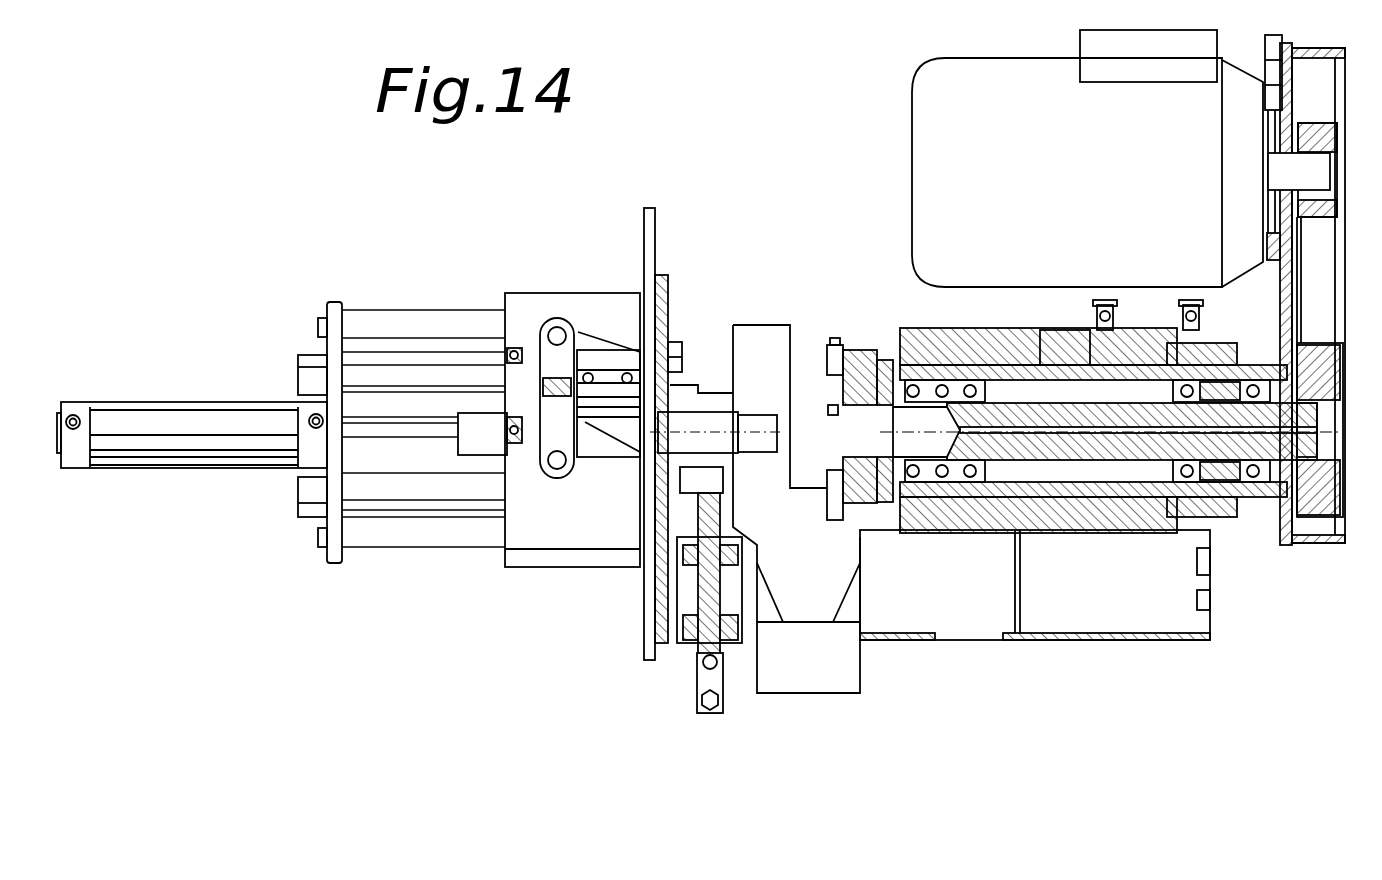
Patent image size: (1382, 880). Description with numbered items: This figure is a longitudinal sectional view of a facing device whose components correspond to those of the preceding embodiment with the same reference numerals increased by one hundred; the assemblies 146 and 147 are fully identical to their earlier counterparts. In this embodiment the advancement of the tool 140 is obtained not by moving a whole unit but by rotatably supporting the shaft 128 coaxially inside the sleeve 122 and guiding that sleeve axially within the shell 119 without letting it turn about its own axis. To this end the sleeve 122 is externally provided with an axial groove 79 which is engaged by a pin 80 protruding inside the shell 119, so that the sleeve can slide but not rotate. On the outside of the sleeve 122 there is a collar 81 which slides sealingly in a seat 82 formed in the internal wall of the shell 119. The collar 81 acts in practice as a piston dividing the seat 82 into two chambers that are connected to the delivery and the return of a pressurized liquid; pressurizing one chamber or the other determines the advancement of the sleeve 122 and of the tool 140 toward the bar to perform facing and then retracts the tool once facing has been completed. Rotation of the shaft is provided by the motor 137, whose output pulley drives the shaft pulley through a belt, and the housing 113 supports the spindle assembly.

The motor 137 is at (893, 64).
The assembly 146 is at (425, 258).
The assembly 147 is at (703, 352).
The tool 140 is at (822, 335).
The pin 80 is at (1013, 330).
The axial groove 79 is at (1060, 330).
The seat 82 is at (1135, 330).
The collar 81 is at (1150, 330).
The shaft 128 is at (1028, 455).
The shell 119 is at (1076, 518).
The sleeve 122 is at (1262, 487).
The housing base 113 is at (1110, 655).